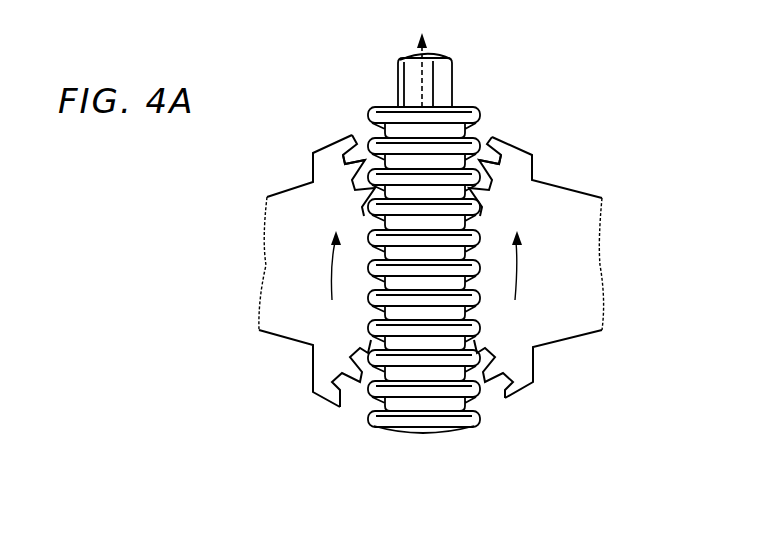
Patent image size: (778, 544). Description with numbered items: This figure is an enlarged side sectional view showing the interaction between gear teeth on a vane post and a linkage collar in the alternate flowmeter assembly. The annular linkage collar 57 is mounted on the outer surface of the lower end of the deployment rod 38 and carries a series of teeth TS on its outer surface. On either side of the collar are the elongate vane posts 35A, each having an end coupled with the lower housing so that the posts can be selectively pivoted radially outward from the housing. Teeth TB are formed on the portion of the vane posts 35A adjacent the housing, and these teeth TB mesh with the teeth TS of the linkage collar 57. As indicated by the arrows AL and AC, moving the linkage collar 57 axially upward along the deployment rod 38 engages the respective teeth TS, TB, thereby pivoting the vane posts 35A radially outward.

The linkage collar 57 is at (480, 418).
The screw stem 38 is at (397, 70).
The arrow AL is at (427, 93).
The vane posts 35A is at (586, 182).
The teeth TB is at (358, 131).
The teeth TS is at (493, 132).
The arrow AC is at (332, 273).